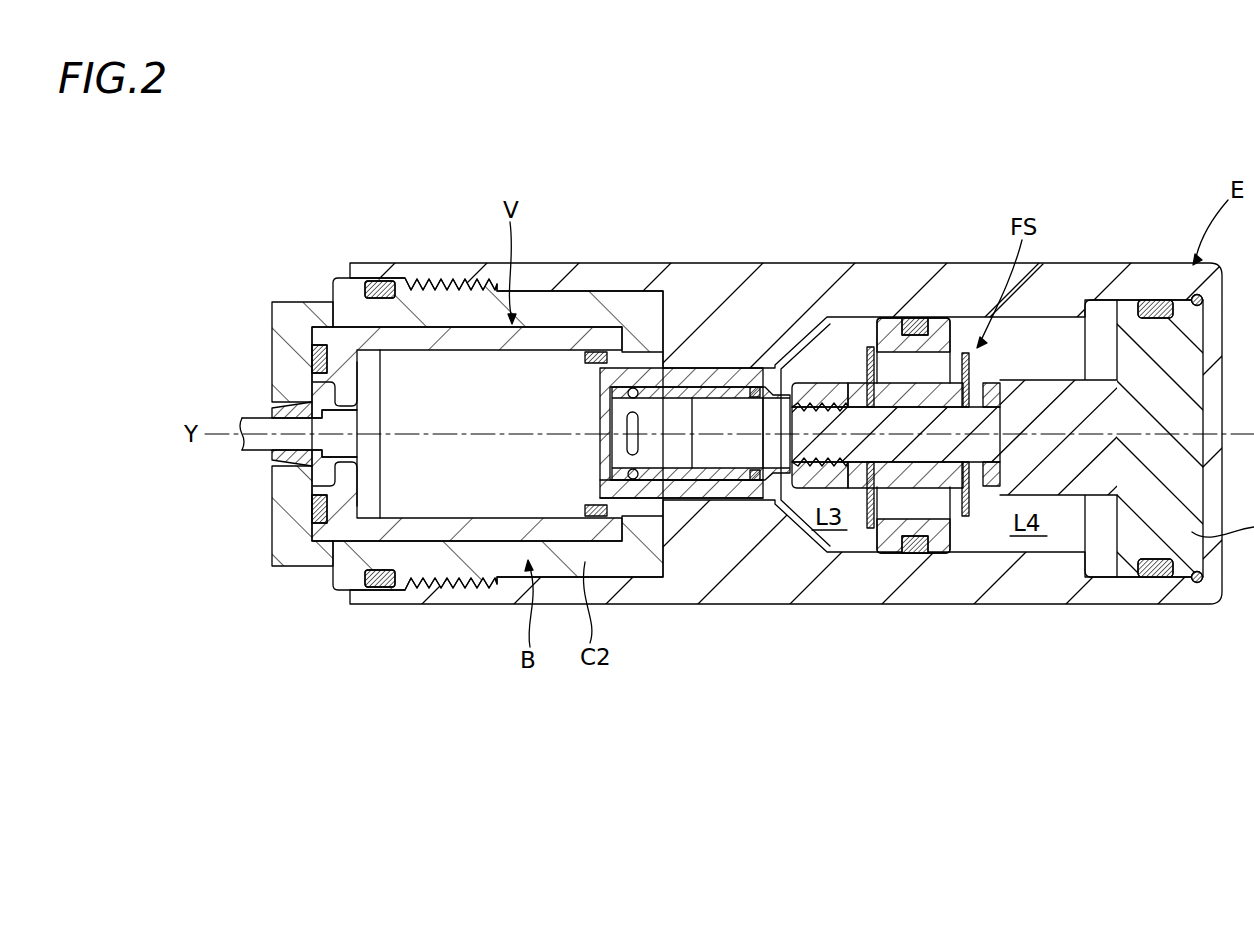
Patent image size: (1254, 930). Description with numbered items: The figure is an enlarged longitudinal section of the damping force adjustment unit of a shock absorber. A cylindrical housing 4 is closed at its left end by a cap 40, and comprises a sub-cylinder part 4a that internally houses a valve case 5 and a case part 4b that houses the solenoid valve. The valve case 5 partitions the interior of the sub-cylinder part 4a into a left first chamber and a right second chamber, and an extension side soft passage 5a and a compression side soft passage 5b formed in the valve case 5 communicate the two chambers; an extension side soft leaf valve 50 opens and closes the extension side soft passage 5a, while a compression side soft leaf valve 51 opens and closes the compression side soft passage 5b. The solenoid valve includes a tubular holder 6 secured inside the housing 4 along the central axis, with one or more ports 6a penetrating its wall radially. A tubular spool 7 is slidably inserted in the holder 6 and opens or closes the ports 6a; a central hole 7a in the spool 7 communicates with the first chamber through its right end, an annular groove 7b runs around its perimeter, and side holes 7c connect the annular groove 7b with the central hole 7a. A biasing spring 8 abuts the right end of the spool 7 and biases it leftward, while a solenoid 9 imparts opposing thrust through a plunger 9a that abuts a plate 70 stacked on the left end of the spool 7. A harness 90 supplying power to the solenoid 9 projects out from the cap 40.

The housing 4 is at (1133, 602).
The sub-cylinder part 4a is at (968, 278).
The case part 4b is at (555, 290).
The valve case 5 is at (868, 535).
The extension side soft passage 5a is at (917, 503).
The compression side soft passage 5b is at (910, 318).
The holder 6 is at (725, 387).
The port 6a is at (650, 378).
The spool 7 is at (669, 370).
The central hole 7a is at (683, 500).
The annular groove 7b is at (632, 482).
The side hole 7c is at (637, 432).
The biasing spring 8 is at (752, 482).
The solenoid 9 is at (412, 326).
The plunger 9a is at (588, 440).
The cap 40 is at (295, 305).
The extension side soft leaf valve 50 is at (981, 520).
The compression side soft leaf valve 51 is at (845, 317).
The plate 70 is at (595, 352).
The harness 90 is at (262, 416).